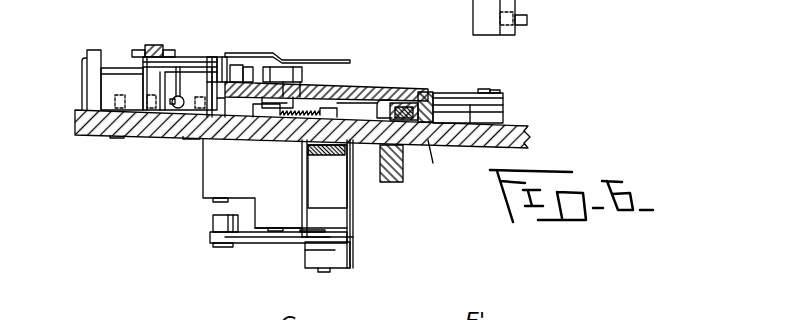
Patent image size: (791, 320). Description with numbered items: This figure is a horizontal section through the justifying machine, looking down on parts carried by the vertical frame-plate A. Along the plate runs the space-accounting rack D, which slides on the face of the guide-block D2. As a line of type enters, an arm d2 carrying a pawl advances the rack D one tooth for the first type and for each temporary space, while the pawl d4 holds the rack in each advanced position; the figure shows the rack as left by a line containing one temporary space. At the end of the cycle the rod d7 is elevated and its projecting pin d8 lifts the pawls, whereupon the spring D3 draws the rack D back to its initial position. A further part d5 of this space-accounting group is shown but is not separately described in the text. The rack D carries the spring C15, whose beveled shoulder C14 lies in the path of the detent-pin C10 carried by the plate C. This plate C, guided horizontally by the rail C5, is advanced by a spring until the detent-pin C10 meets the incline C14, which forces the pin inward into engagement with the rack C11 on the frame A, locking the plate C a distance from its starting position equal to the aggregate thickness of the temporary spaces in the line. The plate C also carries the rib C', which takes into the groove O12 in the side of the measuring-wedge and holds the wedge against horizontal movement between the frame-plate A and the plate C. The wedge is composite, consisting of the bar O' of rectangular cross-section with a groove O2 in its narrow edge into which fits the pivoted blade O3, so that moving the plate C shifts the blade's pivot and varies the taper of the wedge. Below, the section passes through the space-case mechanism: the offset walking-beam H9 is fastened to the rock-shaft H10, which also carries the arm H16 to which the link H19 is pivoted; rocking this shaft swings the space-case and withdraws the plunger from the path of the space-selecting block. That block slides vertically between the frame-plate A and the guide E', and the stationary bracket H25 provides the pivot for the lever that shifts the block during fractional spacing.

The vertical plate A is at (532, 140).
The spring D3 is at (106, 66).
The guide-block D2 is at (108, 100).
The rack D is at (113, 67).
The pawl d4 is at (157, 46).
The clamp flange d5 is at (133, 53).
The arm d2 is at (170, 53).
The projecting pin d8 is at (184, 97).
The rod d7 is at (177, 104).
The spring C15 is at (248, 54).
The beveled shoulder C14 is at (280, 61).
The detent-pin C10 is at (302, 76).
The plate C is at (326, 83).
The rack C11 is at (316, 110).
The blade O3 is at (392, 93).
The groove O2 is at (428, 140).
The groove O12 is at (440, 162).
The rib C' is at (464, 89).
The bar O' is at (499, 110).
The rail C5 is at (503, 98).
The stationary bracket H25 is at (252, 183).
The offset walking-beam H9 is at (327, 204).
The rock-shaft H10 is at (327, 272).
The arm H16 is at (273, 237).
The link H19 is at (213, 222).
The guide E' is at (398, 186).